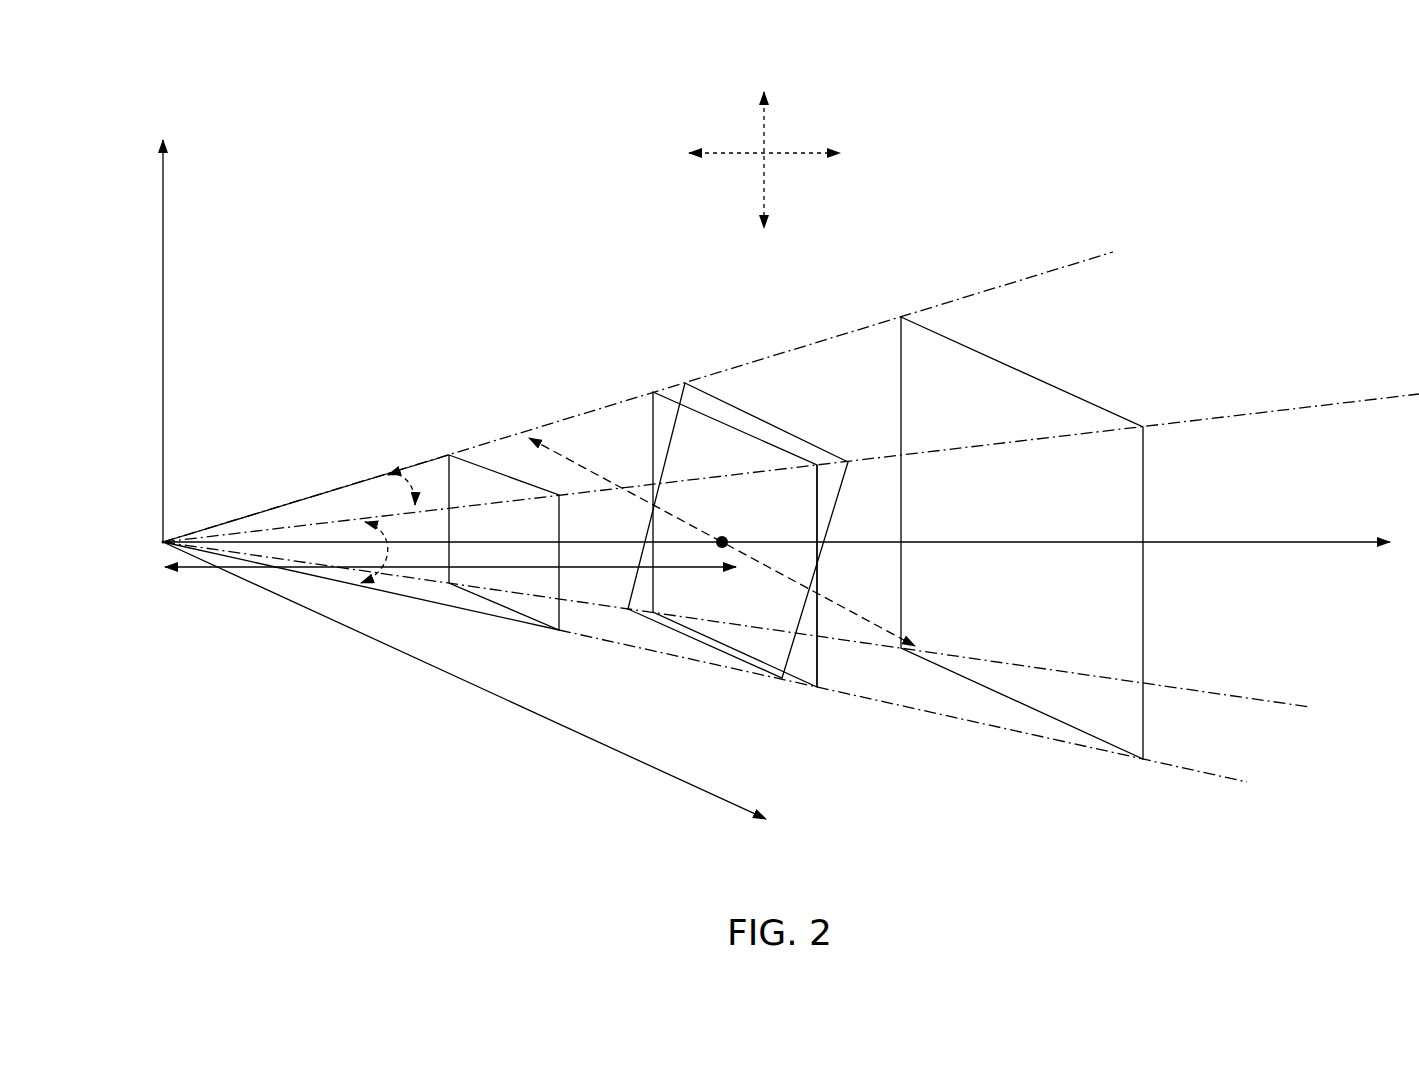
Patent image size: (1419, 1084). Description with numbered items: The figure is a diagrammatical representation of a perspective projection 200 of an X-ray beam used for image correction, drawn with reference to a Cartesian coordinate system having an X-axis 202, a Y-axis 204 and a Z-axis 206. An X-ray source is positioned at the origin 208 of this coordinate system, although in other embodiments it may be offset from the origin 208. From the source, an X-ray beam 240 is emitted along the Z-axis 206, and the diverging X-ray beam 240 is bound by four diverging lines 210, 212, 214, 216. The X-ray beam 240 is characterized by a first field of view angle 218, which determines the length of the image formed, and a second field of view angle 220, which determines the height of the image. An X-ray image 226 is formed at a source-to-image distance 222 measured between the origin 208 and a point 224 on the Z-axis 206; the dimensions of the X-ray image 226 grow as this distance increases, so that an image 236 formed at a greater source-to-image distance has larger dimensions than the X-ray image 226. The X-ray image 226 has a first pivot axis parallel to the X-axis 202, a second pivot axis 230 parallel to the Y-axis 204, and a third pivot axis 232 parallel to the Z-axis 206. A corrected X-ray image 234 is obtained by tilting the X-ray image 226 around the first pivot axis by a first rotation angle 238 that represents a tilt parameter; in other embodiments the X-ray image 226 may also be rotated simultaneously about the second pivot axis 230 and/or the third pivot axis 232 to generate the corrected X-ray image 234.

The perspective projection 200 is at (1320, 96).
The X-axis 202 is at (567, 730).
The Y-axis 204 is at (161, 243).
The Z-axis 206 is at (1257, 540).
The origin 208 is at (161, 543).
The diverging line 210 is at (1193, 773).
The diverging line 212 is at (1220, 693).
The diverging line 214 is at (1245, 413).
The diverging line 216 is at (1057, 263).
The first field of view angle 218 is at (397, 472).
The second field of view angle 220 is at (372, 586).
The source-to-image distance 222 is at (193, 568).
The point 224 is at (731, 539).
The X-ray image 226 is at (822, 651).
The second pivot axis 230 is at (766, 108).
The third pivot axis 232 is at (818, 155).
The corrected X-ray image 234 is at (673, 630).
The image 236 is at (1037, 707).
The first rotation angle 238 is at (820, 513).
The X-ray beam 240 is at (236, 518).